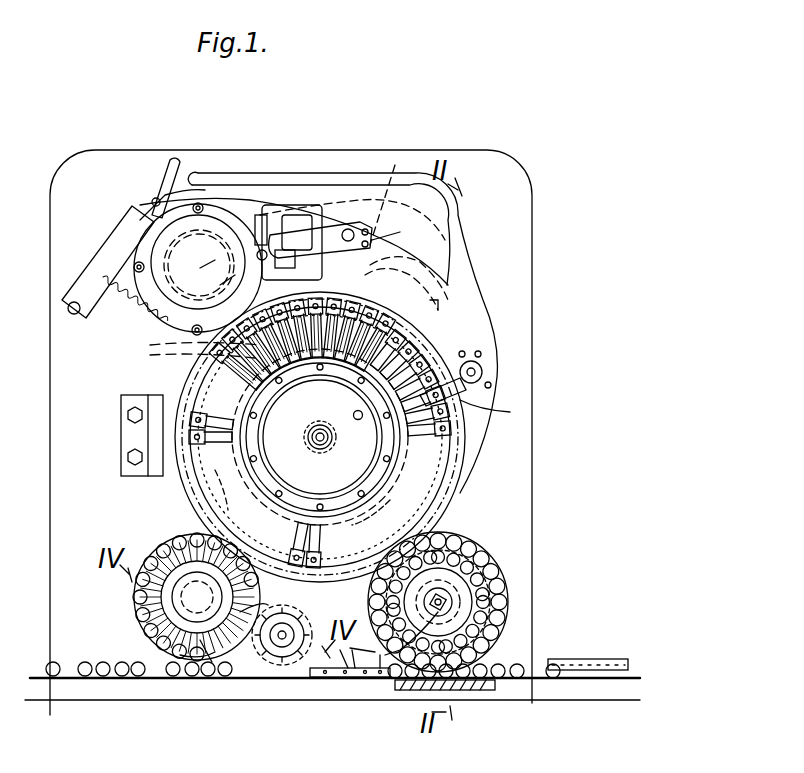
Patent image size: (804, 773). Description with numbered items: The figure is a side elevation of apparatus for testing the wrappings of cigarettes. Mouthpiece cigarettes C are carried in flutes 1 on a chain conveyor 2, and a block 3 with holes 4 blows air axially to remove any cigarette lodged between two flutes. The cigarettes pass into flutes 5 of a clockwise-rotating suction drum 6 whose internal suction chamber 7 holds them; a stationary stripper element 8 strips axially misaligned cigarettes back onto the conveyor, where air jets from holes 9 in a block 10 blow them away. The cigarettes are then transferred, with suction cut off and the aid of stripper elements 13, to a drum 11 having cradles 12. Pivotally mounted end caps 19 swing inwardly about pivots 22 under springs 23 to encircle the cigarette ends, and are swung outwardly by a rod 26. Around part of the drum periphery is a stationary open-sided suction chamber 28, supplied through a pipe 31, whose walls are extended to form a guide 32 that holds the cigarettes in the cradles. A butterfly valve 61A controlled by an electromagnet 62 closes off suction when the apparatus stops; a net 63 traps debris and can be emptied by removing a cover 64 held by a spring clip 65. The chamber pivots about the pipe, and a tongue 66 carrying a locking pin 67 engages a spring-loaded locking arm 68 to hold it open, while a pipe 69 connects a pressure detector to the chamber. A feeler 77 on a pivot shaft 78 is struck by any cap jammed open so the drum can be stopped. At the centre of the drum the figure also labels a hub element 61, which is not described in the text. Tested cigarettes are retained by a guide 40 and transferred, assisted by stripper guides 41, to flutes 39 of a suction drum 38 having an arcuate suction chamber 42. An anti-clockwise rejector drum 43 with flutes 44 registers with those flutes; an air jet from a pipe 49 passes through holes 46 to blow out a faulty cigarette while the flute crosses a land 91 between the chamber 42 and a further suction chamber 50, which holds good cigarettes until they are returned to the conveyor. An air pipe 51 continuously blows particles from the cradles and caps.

The flutes 1 is at (518, 682).
The chain conveyor 2 is at (478, 690).
The block 3 is at (610, 660).
The holes 4 is at (583, 660).
The mouthpiece cigarettes C is at (550, 668).
The flutes 5 is at (506, 608).
The suction drum 6 is at (504, 572).
The internal suction chamber 7 is at (430, 597).
The stationary stripper element 8 is at (384, 680).
The holes 9 is at (358, 680).
The block 10 is at (348, 680).
The drum 11 is at (440, 528).
The cradles 12 is at (360, 512).
The stripper elements 13 is at (400, 497).
The end caps 19 is at (392, 300).
The pivots 22 is at (240, 382).
The springs 23 is at (305, 380).
The rod 26 is at (189, 346).
The suction chamber 28 is at (440, 330).
The pipe 31 is at (215, 240).
The guide 32 is at (460, 474).
The suction drum 38 is at (156, 560).
The flutes 39 is at (172, 552).
The guide 40 is at (180, 486).
The stripper guides 41 is at (305, 508).
The arcuate suction chamber 42 is at (228, 510).
The rejector drum 43 is at (262, 640).
The flutes 44 is at (282, 660).
The holes 46 is at (270, 555).
The pipe 49 is at (320, 678).
The suction chamber 50 is at (190, 678).
The air pipe 51 is at (340, 650).
The drum shaft 61 is at (330, 432).
The butterfly valve 61A is at (354, 219).
The electromagnet 62 is at (395, 165).
The net 63 is at (300, 215).
The cover 64 is at (300, 218).
The spring clip 65 is at (355, 230).
The tongue 66 is at (190, 205).
The locking pin 67 is at (180, 185).
The locking arm 68 is at (125, 228).
The pipe 69 is at (462, 215).
The feeler 77 is at (510, 412).
The pivot shaft 78 is at (474, 366).
The land 91 is at (212, 678).